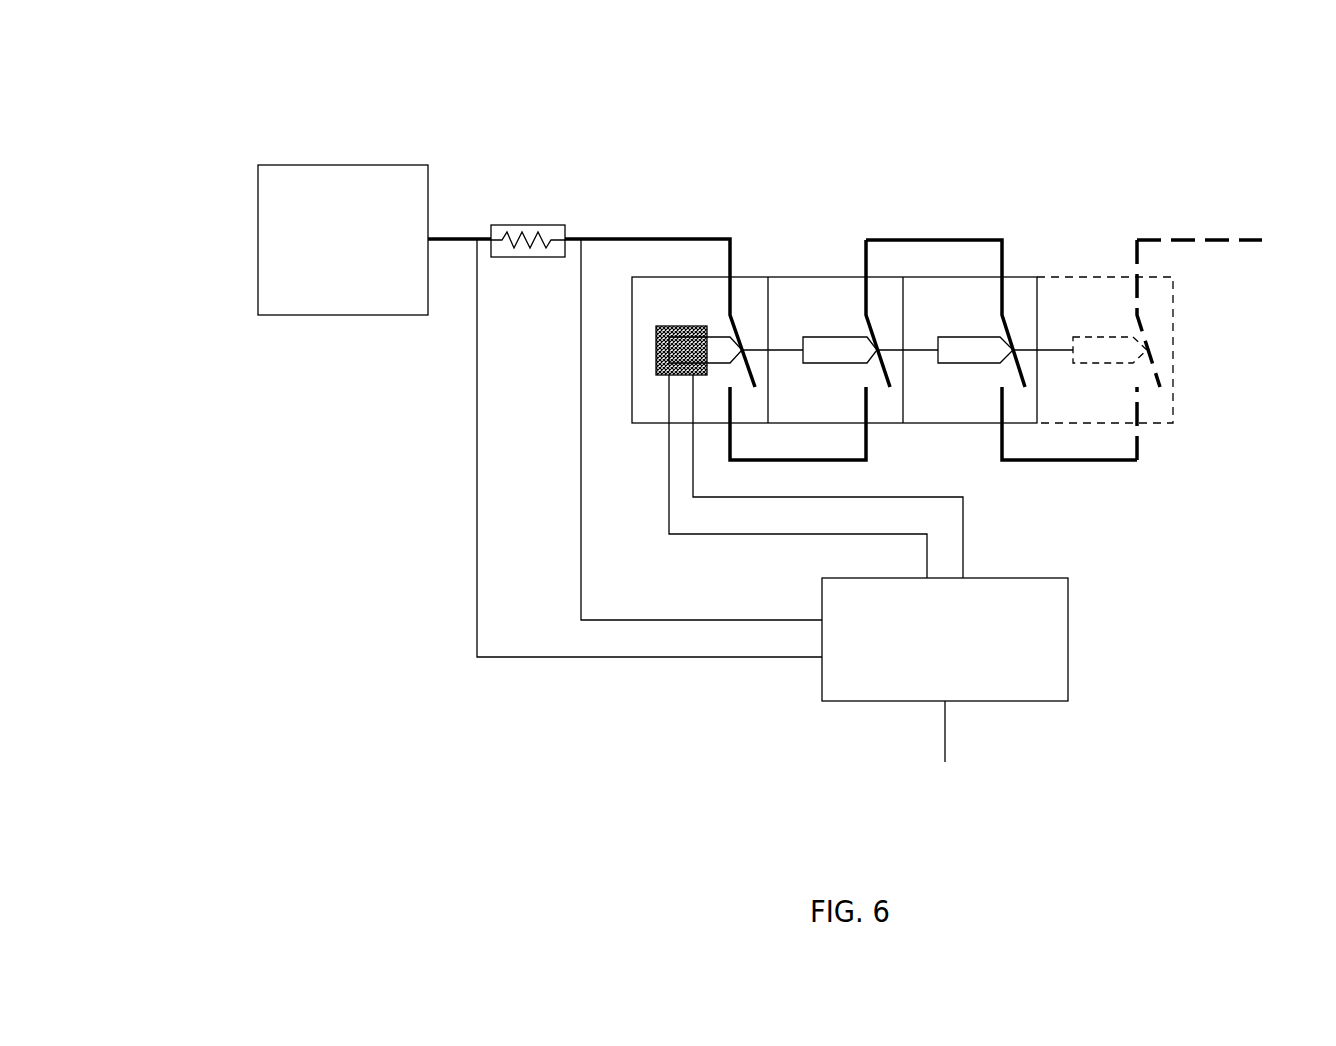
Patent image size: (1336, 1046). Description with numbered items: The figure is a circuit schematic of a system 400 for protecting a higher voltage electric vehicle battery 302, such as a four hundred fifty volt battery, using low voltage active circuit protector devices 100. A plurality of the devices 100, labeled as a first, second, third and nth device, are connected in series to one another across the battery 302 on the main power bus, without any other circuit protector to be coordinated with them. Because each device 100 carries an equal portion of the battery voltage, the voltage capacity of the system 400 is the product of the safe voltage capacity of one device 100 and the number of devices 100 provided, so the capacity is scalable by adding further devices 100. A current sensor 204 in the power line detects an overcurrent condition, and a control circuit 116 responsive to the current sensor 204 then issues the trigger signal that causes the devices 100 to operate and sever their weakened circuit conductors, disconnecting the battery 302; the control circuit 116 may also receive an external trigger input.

The system 400 is at (932, 89).
The battery 302 is at (258, 222).
The current sensor 204 is at (530, 262).
The low voltage active circuit protector device 100 is at (838, 273).
The control circuit 116 is at (1068, 624).